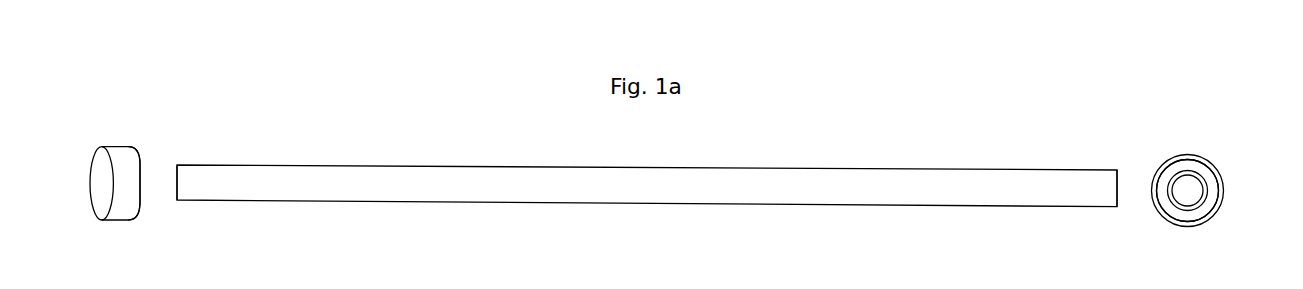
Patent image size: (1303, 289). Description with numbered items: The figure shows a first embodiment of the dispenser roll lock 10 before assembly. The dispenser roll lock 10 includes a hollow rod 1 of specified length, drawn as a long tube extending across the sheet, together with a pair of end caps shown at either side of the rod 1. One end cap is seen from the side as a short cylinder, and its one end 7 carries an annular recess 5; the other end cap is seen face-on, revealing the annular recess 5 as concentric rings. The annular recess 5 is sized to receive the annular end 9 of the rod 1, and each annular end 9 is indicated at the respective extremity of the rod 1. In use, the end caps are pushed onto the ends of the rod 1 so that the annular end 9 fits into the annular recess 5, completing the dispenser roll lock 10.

The hollow rod 1 is at (1050, 170).
The annular recess 5 is at (1208, 173).
The end of end cap 7 is at (138, 165).
The annular end of rod 9 is at (198, 200).
The dispenser roll lock 10 is at (433, 146).